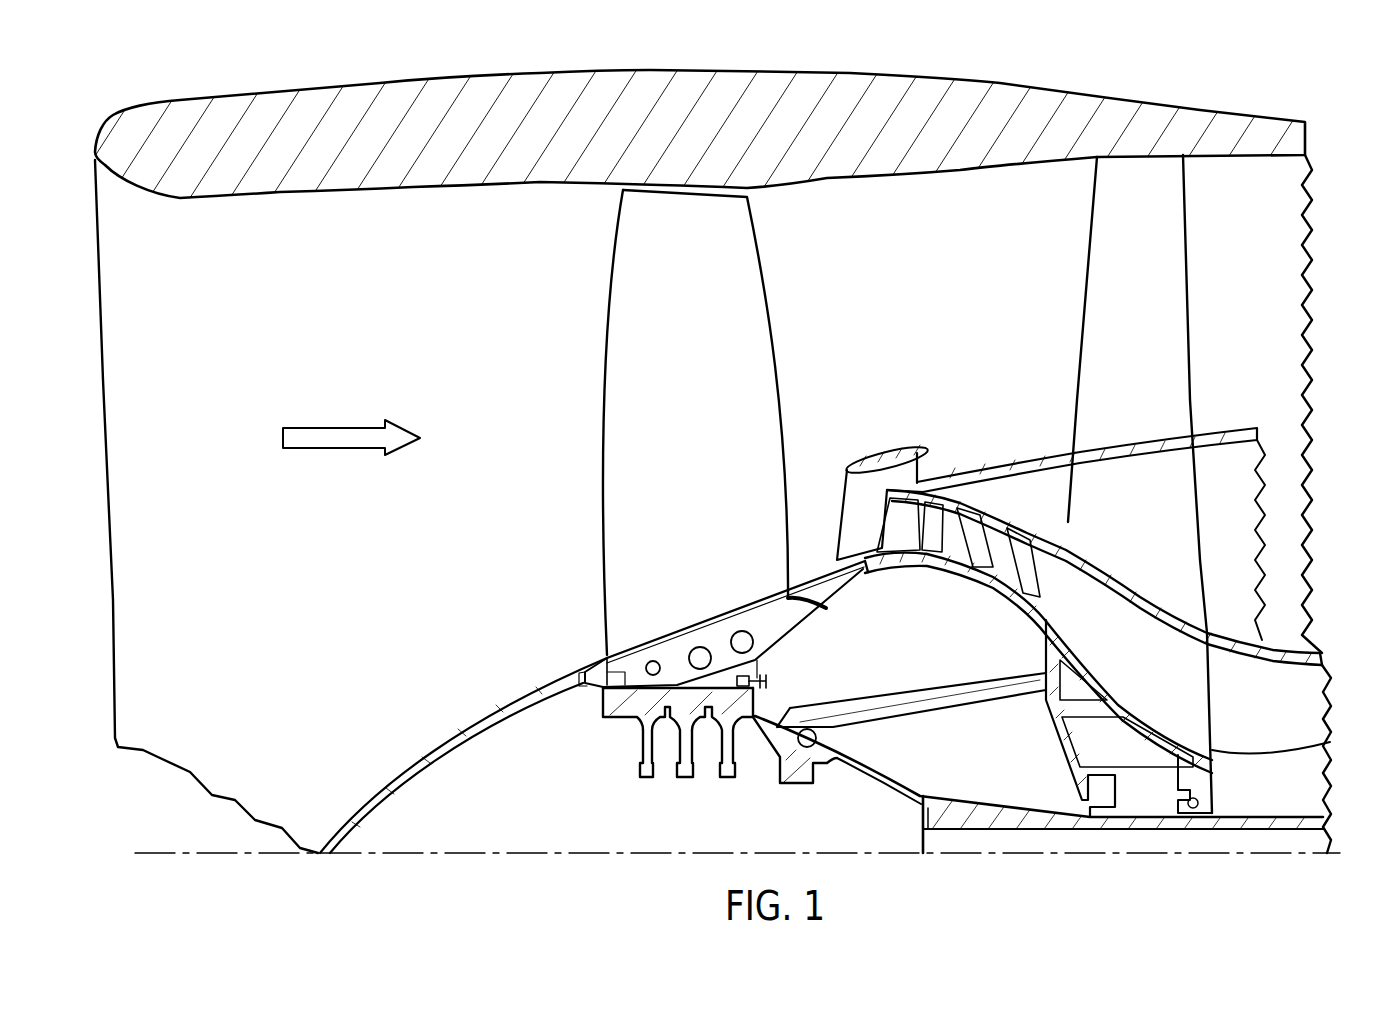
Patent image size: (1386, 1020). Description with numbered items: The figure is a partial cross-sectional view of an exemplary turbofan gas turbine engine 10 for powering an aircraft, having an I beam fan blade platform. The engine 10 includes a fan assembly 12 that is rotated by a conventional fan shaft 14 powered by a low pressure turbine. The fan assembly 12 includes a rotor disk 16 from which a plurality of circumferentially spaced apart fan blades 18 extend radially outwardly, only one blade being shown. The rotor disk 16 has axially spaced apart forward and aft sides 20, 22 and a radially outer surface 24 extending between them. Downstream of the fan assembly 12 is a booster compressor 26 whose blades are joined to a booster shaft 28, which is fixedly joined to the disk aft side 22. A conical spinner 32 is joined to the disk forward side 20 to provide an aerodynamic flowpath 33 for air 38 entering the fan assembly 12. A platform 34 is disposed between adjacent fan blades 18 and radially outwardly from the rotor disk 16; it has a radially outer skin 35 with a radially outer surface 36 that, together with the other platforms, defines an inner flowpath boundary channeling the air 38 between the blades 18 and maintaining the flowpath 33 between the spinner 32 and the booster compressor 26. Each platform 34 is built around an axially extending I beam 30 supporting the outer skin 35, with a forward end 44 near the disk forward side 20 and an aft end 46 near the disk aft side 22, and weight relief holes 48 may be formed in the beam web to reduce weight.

The turbofan gas turbine engine 10 is at (166, 90).
The fan assembly 12 is at (579, 521).
The fan shaft 14 is at (950, 795).
The rotor disk 16 is at (690, 752).
The fan blades 18 is at (778, 357).
The forward side 20 is at (603, 715).
The aft side 22 is at (775, 712).
The radially outer surface 24 is at (723, 692).
The booster compressor 26 is at (1084, 504).
The booster shaft 28 is at (947, 590).
The I beam 30 is at (690, 722).
The conical spinner 32 is at (477, 720).
The aerodynamic flowpath 33 is at (706, 615).
The platform 34 is at (658, 641).
The radially outer skin 35 is at (690, 632).
The radially outer surface 36 is at (722, 622).
The air 38 is at (335, 428).
The forward end 44 is at (618, 652).
The aft end 46 is at (762, 652).
The weight relief holes 48 is at (768, 638).